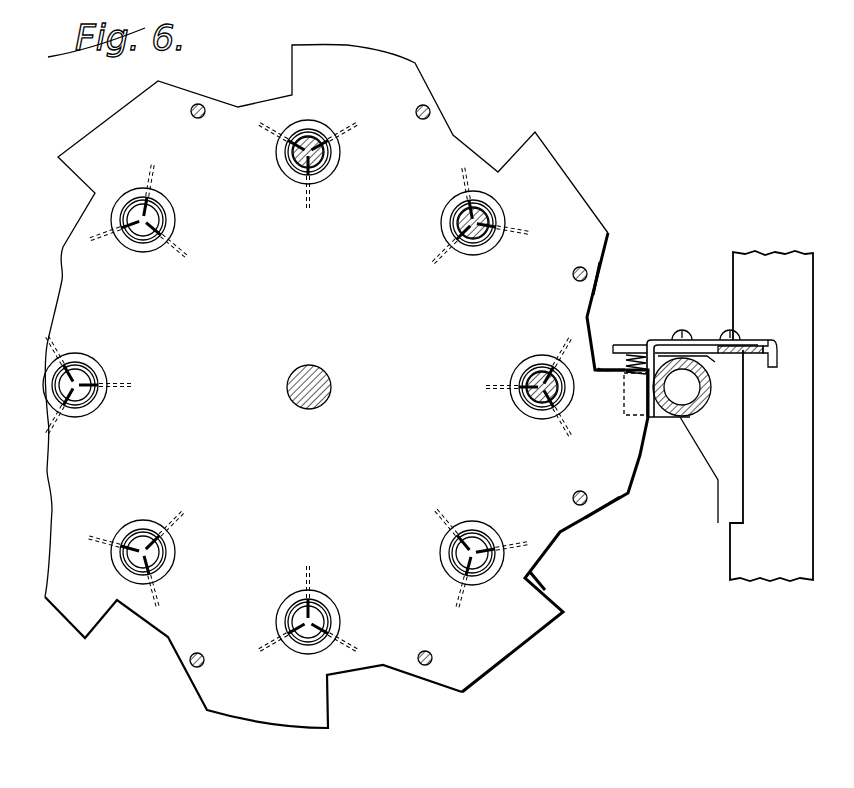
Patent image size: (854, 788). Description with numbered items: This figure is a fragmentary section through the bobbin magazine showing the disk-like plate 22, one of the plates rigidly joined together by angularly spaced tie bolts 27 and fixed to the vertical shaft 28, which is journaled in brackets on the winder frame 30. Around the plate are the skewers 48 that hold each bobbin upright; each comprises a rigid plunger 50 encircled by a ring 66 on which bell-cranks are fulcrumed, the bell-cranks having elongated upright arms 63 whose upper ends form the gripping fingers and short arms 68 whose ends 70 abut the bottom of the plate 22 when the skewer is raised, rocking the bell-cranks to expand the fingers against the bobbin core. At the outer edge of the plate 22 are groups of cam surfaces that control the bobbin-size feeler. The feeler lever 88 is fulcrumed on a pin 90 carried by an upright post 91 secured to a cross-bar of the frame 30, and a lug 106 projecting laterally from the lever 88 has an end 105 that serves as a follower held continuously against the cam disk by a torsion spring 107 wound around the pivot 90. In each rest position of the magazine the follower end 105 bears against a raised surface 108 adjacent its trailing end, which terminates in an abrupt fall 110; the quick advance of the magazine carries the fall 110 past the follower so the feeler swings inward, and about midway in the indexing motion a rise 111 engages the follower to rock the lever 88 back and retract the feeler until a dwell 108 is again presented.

The disk-like plate 22 is at (563, 182).
The tie bolt 27 is at (588, 274).
The vertical shaft 28 is at (322, 395).
The winder frame 30 is at (742, 277).
The skewer 48 is at (287, 172).
The plunger 50 is at (530, 367).
The upright arm 63 is at (562, 373).
The ring 66 is at (523, 403).
The short arm 68 is at (515, 393).
The arm end 70 is at (567, 340).
The lever 88 is at (767, 345).
The pin 90 is at (633, 346).
The post 91 is at (670, 414).
The follower end 105 is at (647, 374).
The lug 106 is at (697, 338).
The torsion spring 107 is at (598, 368).
The raised cam surface 108 is at (603, 217).
The abrupt fall 110 is at (610, 372).
The rise 111 is at (607, 262).